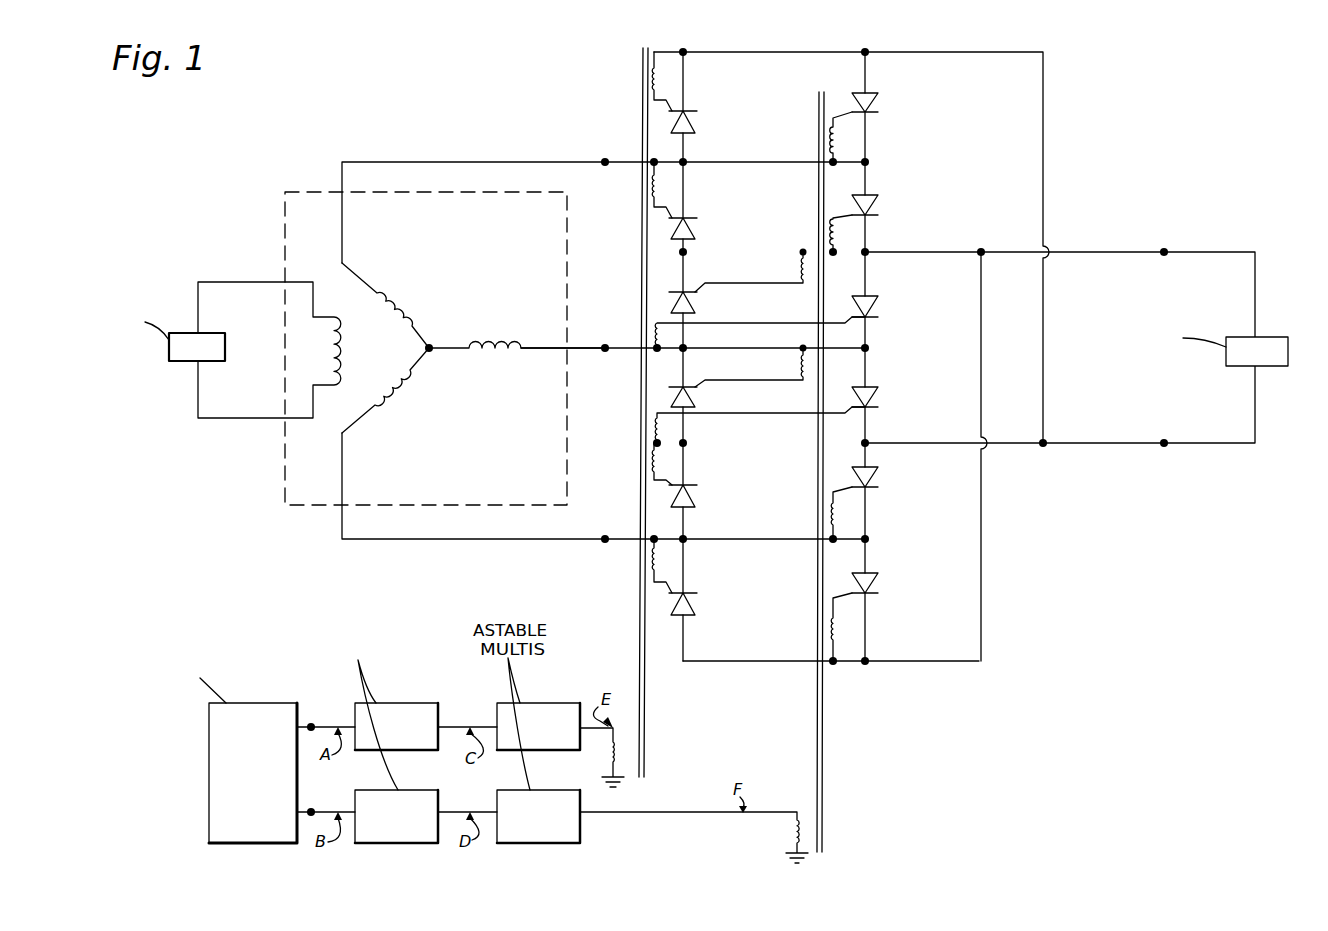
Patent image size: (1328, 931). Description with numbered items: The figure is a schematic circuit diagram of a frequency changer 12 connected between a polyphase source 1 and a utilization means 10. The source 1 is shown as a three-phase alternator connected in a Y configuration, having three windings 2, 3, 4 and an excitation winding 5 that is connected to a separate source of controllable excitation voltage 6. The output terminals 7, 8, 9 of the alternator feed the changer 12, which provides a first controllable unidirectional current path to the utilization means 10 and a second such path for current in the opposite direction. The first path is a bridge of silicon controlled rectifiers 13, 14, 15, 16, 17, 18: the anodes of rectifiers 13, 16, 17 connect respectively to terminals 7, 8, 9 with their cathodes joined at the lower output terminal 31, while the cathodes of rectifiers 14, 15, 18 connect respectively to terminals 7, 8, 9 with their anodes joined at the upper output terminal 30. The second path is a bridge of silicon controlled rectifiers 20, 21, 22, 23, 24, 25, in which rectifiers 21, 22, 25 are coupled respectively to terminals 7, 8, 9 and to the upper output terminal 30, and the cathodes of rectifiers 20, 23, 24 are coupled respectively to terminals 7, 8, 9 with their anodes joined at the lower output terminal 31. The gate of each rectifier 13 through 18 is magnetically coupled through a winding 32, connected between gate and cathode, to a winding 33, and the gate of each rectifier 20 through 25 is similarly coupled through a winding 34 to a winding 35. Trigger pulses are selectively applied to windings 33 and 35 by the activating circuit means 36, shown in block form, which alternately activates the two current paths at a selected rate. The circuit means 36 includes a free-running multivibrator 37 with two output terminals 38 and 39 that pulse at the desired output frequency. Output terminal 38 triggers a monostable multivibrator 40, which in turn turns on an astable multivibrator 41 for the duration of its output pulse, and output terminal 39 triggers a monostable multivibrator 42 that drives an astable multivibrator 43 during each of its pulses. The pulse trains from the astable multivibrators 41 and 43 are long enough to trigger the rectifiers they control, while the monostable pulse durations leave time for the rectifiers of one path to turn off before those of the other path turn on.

The polyphase source 1 is at (293, 192).
The winding 2 is at (396, 301).
The winding 3 is at (515, 346).
The winding 4 is at (392, 390).
The excitation winding 5 is at (340, 352).
The source of controllable excitation voltage 6 is at (176, 362).
The output terminal 7 is at (605, 160).
The output terminal 8 is at (605, 346).
The output terminal 9 is at (605, 537).
The utilization means 10 is at (1278, 366).
The frequency changer 12 is at (788, 29).
The silicon controlled rectifier 13 is at (697, 125).
The silicon controlled rectifier 14 is at (697, 231).
The silicon controlled rectifier 15 is at (878, 308).
The silicon controlled rectifier 16 is at (878, 399).
The silicon controlled rectifier 17 is at (697, 497).
The silicon controlled rectifier 18 is at (697, 606).
The silicon controlled rectifier 20 is at (878, 104).
The silicon controlled rectifier 21 is at (878, 207).
The silicon controlled rectifier 22 is at (697, 305).
The silicon controlled rectifier 23 is at (697, 400).
The silicon controlled rectifier 24 is at (878, 479).
The silicon controlled rectifier 25 is at (878, 585).
The upper output terminal 30 is at (1164, 256).
The lower output terminal 31 is at (1166, 441).
The winding 32 is at (651, 80).
The winding 33 is at (610, 758).
The winding 34 is at (830, 141).
The winding 35 is at (793, 833).
The activating circuit means 36 is at (418, 669).
The free-running multivibrator 37 is at (272, 703).
The output terminal 38 is at (311, 727).
The output terminal 39 is at (311, 812).
The monostable multivibrator 40 is at (410, 703).
The astable multivibrator 41 is at (560, 703).
The monostable multivibrator 42 is at (425, 843).
The astable multivibrator 43 is at (580, 838).